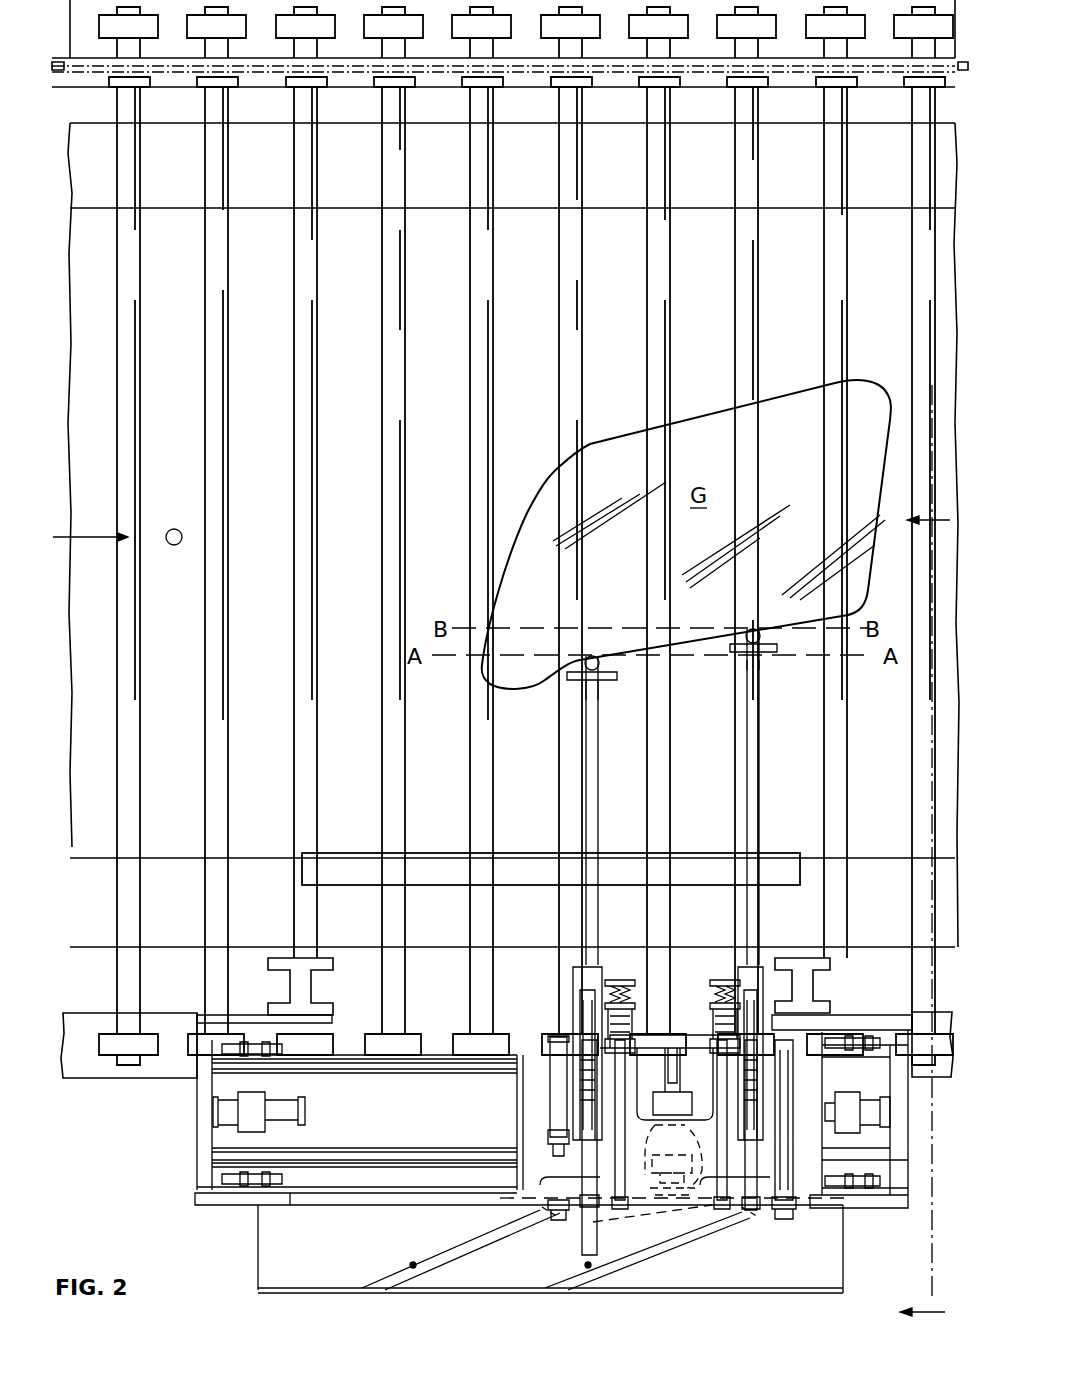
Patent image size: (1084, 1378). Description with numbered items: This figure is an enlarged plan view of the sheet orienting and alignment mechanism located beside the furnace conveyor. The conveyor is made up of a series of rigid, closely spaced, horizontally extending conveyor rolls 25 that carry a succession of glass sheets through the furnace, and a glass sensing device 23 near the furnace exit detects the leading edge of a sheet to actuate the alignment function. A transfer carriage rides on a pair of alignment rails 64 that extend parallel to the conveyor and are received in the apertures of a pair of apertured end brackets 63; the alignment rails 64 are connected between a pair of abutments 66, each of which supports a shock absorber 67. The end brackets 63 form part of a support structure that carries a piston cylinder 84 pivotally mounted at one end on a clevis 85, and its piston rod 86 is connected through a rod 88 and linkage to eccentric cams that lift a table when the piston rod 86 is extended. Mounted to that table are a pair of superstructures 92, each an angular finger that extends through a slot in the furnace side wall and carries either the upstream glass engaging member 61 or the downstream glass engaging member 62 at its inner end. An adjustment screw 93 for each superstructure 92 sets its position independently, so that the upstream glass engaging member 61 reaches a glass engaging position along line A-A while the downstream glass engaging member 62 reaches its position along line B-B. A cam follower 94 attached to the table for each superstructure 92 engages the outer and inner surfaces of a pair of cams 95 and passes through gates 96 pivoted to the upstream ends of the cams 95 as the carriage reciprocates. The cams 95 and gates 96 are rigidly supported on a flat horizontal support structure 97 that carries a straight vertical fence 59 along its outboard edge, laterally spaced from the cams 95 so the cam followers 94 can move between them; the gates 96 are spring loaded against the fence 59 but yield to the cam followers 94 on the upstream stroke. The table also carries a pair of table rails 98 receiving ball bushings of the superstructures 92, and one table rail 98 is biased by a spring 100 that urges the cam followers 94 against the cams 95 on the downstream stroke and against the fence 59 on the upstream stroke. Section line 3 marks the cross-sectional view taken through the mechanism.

The section line 3- 3 is at (931, 855).
The glass sensing device 23 is at (176, 546).
The conveyor rolls 25 is at (300, 421).
The straight vertical fence 59 is at (298, 1295).
The upstream glass engaging member 61 is at (596, 654).
The downstream glass engaging member 62 is at (749, 630).
The apertured end brackets 63 is at (517, 1112).
The alignment rails 64 is at (428, 1148).
The abutments 66 is at (213, 1126).
The shock absorber 67 is at (308, 1112).
The piston cylinder 84 is at (661, 1160).
The clevis 85 is at (701, 1159).
The piston rod 86 is at (667, 1066).
The rod 88 is at (680, 1100).
The superstructures 92 is at (598, 785).
The adjustment screw 93 is at (583, 1052).
The cam followers 94 is at (556, 1172).
The cams 95 is at (505, 1242).
The gates 96 is at (396, 1272).
The horizontal support structure 97 is at (336, 1248).
The table rails 98 is at (638, 1072).
The spring 100 is at (715, 1023).